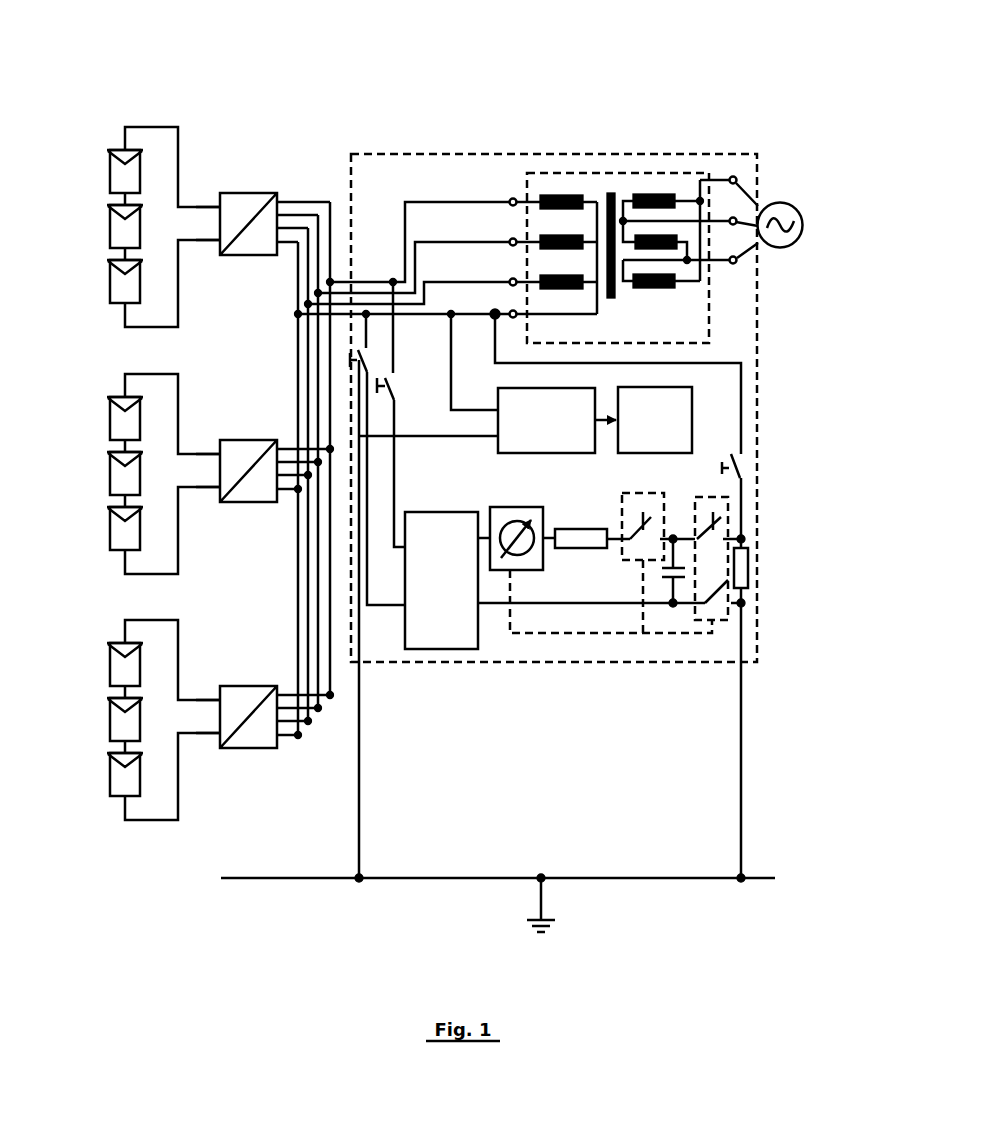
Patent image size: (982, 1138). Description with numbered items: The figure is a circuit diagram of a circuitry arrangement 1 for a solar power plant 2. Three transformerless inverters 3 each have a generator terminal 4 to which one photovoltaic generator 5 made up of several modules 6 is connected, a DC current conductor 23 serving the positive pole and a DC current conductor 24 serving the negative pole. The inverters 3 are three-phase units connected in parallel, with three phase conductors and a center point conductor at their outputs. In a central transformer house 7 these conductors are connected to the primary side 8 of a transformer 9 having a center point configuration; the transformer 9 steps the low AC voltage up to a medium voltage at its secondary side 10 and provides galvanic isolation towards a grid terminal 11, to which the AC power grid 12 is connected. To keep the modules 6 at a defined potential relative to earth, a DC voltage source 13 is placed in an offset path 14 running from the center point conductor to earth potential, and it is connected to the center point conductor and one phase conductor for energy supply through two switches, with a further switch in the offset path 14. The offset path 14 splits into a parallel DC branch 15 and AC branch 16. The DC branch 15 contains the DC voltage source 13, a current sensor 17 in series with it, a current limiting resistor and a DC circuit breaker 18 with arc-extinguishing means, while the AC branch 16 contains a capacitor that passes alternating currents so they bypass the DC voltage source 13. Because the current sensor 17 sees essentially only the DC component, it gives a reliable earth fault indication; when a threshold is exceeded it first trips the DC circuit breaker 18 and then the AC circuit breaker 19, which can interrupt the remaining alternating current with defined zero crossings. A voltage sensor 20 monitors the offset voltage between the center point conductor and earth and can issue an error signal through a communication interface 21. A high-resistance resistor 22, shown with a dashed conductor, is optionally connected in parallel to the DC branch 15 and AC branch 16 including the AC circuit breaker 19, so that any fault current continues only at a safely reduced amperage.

The circuitry arrangement 1 is at (591, 126).
The solar power plant 2 is at (569, 91).
The transformerless inverter 3 is at (250, 194).
The generator terminal 4 is at (205, 185).
The photovoltaic generator 5 is at (107, 146).
The module 6 is at (110, 281).
The central transformer house 7 is at (702, 170).
The primary side 8 is at (544, 187).
The transformer 9 is at (634, 168).
The secondary side 10 is at (661, 190).
The grid terminal 11 is at (739, 176).
The AC power grid 12 is at (794, 204).
The DC voltage source 13 is at (442, 653).
The offset path 14 is at (745, 404).
The DC branch 15 is at (612, 547).
The AC branch 16 is at (682, 594).
The current sensor 17 is at (500, 506).
The DC circuit breaker 18 is at (627, 494).
The AC circuit breaker 19 is at (696, 497).
The voltage sensor 20 is at (553, 455).
The communication interface 21 is at (692, 427).
The high-resistance resistor 22 is at (748, 568).
The DC current conductor 23 is at (208, 204).
The DC current conductor 24 is at (205, 250).